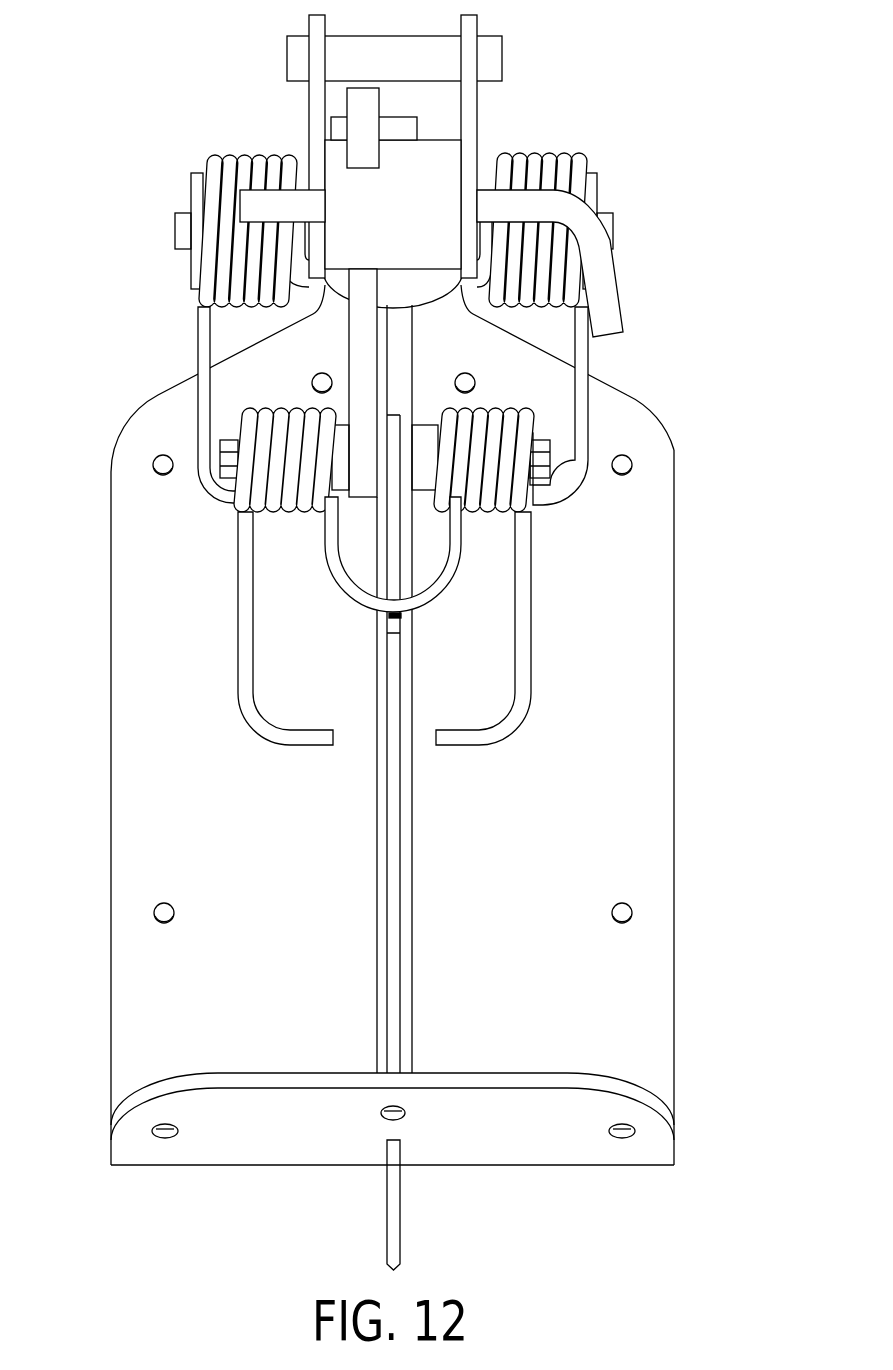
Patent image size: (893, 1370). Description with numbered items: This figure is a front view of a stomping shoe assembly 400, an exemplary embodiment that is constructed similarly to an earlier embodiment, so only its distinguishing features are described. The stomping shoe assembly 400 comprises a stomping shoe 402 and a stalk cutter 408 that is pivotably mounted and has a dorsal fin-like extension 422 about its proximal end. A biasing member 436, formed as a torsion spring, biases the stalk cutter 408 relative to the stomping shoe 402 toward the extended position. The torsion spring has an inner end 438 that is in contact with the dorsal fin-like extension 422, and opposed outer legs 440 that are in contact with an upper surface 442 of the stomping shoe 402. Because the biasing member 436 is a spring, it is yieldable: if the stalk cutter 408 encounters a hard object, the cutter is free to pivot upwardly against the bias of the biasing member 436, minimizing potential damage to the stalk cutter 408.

The stomping shoe assembly 400 is at (692, 155).
The stomping shoe 402 is at (692, 488).
The stalk cutter 408 is at (372, 944).
The dorsal fin-like extension 422 is at (396, 624).
The biasing member 436 is at (268, 430).
The inner end 438 is at (330, 577).
The outer legs 440 is at (310, 738).
The upper surface 442 is at (607, 980).